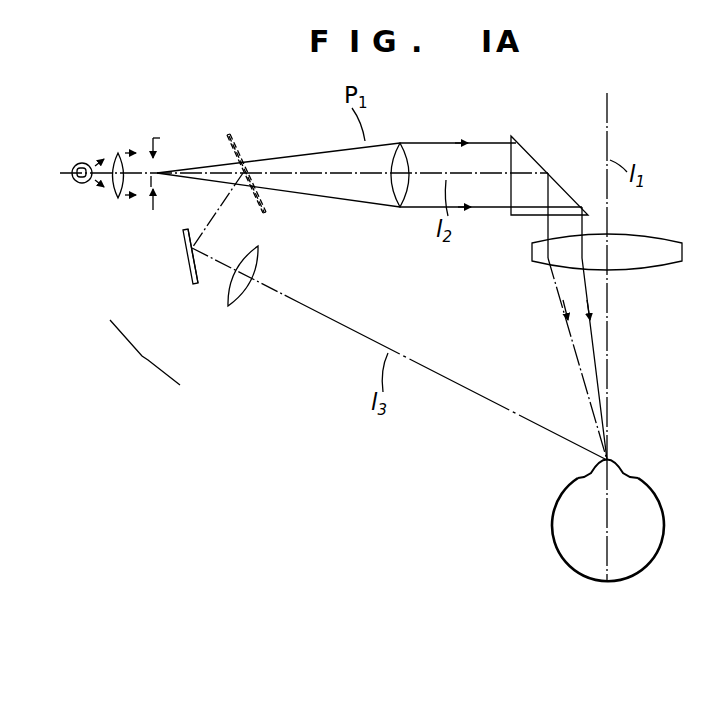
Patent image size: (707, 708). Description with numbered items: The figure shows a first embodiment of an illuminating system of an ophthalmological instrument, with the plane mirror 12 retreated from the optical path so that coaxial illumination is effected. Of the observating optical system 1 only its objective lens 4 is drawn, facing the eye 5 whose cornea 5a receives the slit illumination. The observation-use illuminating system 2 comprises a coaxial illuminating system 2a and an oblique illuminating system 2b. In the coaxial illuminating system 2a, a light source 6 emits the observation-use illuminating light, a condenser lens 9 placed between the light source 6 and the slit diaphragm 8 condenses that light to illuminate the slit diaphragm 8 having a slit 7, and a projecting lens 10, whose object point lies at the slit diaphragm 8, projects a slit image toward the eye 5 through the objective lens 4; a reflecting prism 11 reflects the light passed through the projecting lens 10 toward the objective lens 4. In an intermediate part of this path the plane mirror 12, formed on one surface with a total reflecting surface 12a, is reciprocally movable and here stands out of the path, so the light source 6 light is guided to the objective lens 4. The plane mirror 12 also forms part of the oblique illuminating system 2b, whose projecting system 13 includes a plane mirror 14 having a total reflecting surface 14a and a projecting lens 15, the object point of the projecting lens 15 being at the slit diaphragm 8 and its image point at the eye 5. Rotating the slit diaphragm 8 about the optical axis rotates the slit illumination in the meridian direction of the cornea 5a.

The observating optical system 1 is at (641, 361).
The observation-use illuminating system 2 is at (418, 137).
The coaxial illuminating system 2a is at (488, 193).
The oblique illuminating system 2b is at (334, 311).
The objective lens 4 is at (670, 244).
The eye-to-be-tested 5 is at (663, 503).
The cornea 5a is at (618, 465).
The light source 6 is at (83, 163).
The slit 7 is at (151, 206).
The slit diaphragm 8 is at (160, 138).
The condenser lens 9 is at (117, 200).
The projecting lens 10 is at (393, 196).
The reflecting prism 11 is at (538, 162).
The plane mirror 12 is at (232, 131).
The total reflecting surface 12a is at (222, 147).
The projecting system 13 is at (145, 354).
The plane mirror 14 is at (180, 269).
The total reflecting surface 14a is at (199, 286).
The projecting lens 15 is at (230, 310).